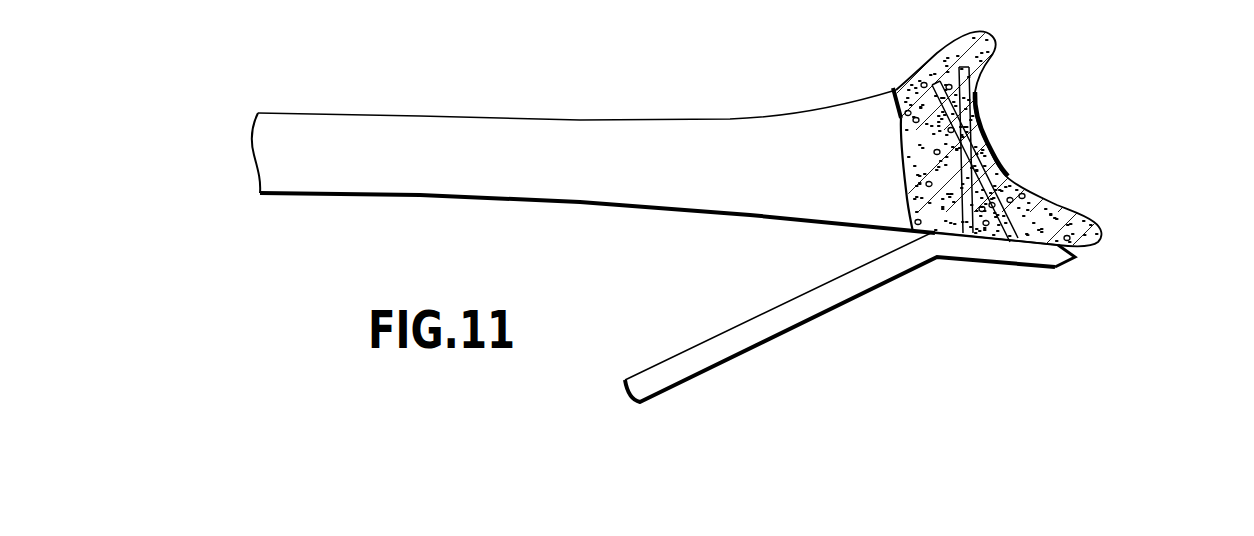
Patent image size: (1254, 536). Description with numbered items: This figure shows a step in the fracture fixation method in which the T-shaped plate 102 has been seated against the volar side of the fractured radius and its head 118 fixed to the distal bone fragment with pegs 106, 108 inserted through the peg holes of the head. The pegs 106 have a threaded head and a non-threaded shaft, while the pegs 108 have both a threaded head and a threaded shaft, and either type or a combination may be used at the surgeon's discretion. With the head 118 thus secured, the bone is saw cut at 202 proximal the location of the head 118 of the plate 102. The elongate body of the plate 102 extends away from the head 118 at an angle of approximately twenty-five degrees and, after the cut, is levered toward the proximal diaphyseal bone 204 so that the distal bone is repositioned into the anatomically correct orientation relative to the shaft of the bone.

The T-shaped plate 102 is at (868, 280).
The head 118 is at (1013, 260).
The pegs 106 is at (970, 203).
The pegs 108 is at (975, 161).
The saw cut 202 is at (901, 82).
The proximal diaphyseal bone 204 is at (695, 193).